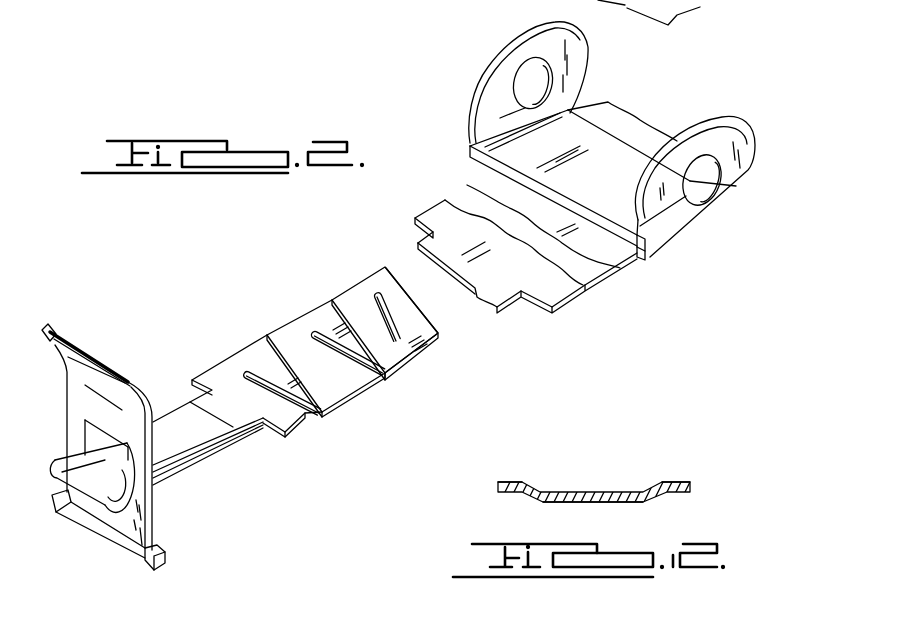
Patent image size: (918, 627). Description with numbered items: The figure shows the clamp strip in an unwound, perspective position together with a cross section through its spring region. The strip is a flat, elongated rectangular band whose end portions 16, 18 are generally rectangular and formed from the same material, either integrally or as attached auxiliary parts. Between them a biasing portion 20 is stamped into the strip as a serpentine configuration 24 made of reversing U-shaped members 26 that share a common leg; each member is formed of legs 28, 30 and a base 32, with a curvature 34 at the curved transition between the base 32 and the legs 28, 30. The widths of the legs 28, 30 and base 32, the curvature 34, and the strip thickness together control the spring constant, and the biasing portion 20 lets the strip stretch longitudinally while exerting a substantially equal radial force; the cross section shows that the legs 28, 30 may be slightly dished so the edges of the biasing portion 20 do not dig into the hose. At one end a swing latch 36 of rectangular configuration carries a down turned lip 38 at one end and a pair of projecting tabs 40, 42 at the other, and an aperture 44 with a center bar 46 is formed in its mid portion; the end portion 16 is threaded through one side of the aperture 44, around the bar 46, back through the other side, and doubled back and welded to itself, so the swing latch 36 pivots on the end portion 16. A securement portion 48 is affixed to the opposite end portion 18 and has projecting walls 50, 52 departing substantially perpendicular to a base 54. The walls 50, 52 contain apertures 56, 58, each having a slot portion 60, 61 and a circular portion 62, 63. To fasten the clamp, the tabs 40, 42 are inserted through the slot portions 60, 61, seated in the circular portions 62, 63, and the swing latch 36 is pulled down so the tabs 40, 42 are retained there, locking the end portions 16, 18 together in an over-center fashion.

In FIG. 2, the end portion 16 is at (165, 446).
In FIG. 2, the end portion 18 is at (618, 260).
In FIG. 2, the biasing portion 20 is at (283, 310).
In FIG. 2, the serpentine configuration 24 is at (303, 306).
In FIG. 3, the serpentine configuration 24 is at (616, 483).
In FIG. 2, the reversing U-shaped members 26 is at (386, 378).
In FIG. 2, the leg 28 is at (356, 338).
In FIG. 3, the leg 28 is at (563, 490).
In FIG. 2, the leg 30 is at (390, 320).
In FIG. 2, the base 32 is at (413, 358).
In FIG. 3, the base 32 is at (513, 481).
In FIG. 2, the curvature 34 is at (439, 335).
In FIG. 3, the curvature 34 is at (676, 480).
In FIG. 2, the swing latch 36 is at (105, 356).
In FIG. 2, the down turned lip 38 is at (52, 336).
In FIG. 2, the projecting tab 40 is at (164, 566).
In FIG. 2, the projecting tab 42 is at (57, 513).
In FIG. 2, the aperture 44 is at (92, 436).
In FIG. 2, the center bar 46 is at (122, 498).
In FIG. 2, the securement portion 48 is at (703, 232).
In FIG. 2, the projecting wall 50 is at (723, 133).
In FIG. 2, the projecting wall 52 is at (557, 33).
In FIG. 2, the base 54 is at (617, 173).
In FIG. 2, the aperture 56 is at (626, 229).
In FIG. 2, the aperture 58 is at (590, 156).
In FIG. 2, the slot portion 60 is at (649, 243).
In FIG. 2, the slot portion 61 is at (505, 118).
In FIG. 2, the circular portion 62 is at (722, 186).
In FIG. 2, the circular portion 63 is at (545, 84).